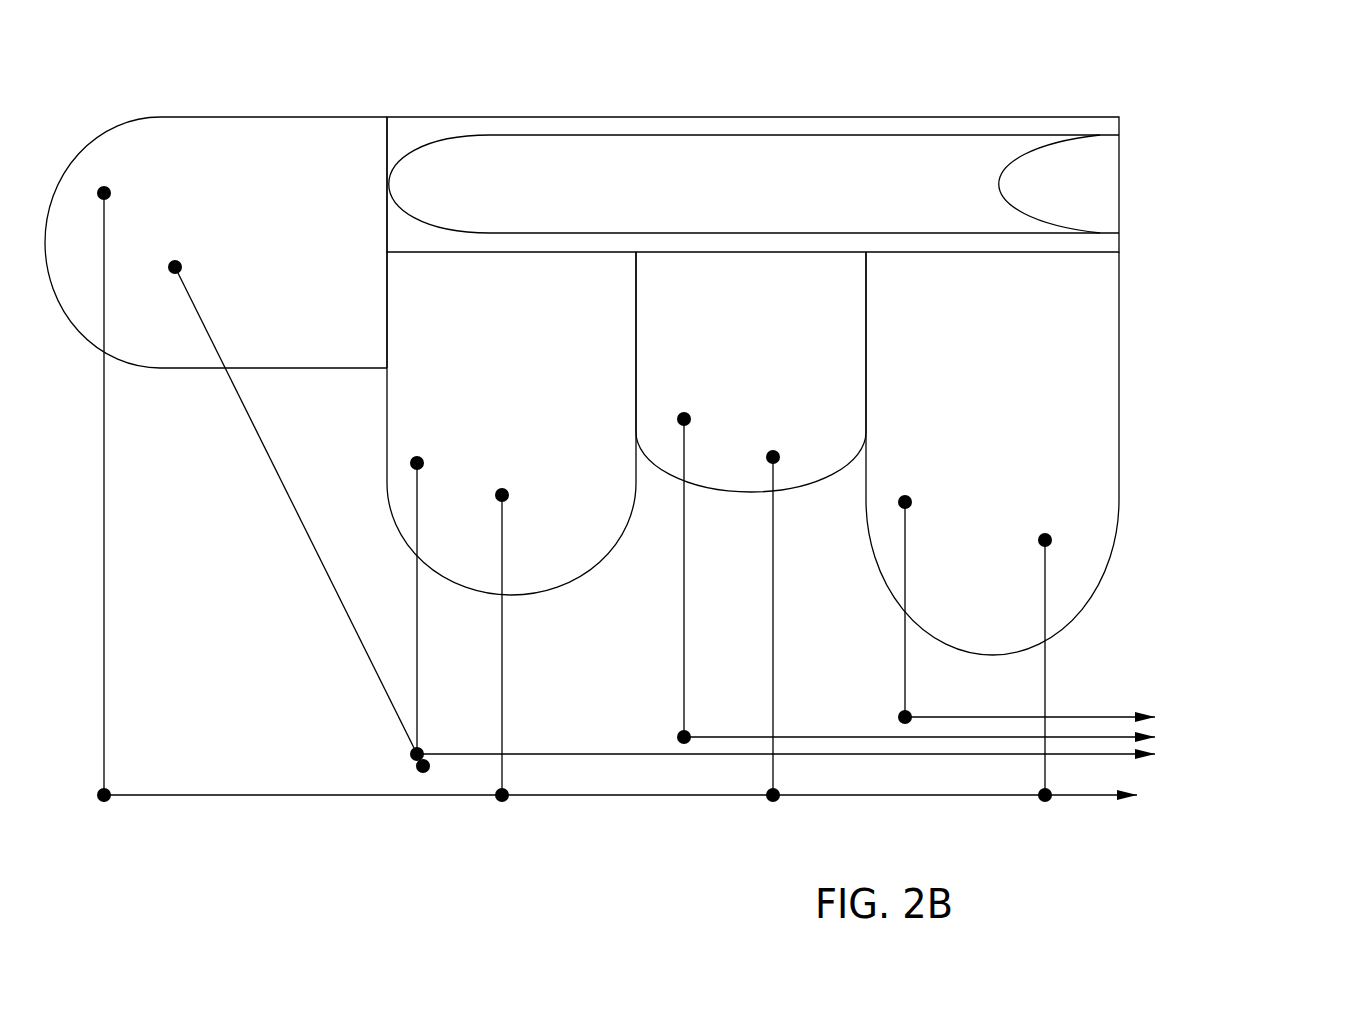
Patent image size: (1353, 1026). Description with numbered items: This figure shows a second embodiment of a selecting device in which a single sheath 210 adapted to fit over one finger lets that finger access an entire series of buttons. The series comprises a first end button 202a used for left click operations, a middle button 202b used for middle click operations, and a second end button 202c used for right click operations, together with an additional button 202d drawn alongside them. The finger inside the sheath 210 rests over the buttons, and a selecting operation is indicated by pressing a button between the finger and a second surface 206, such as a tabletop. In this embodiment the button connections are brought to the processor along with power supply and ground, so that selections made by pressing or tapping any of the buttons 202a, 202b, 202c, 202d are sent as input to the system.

The sheath 210 is at (408, 128).
The first end button 202a is at (540, 297).
The middle button 202b is at (721, 297).
The second end button 202c is at (1014, 297).
The sensor electrode 202d is at (352, 196).
The second surface 206 is at (186, 528).